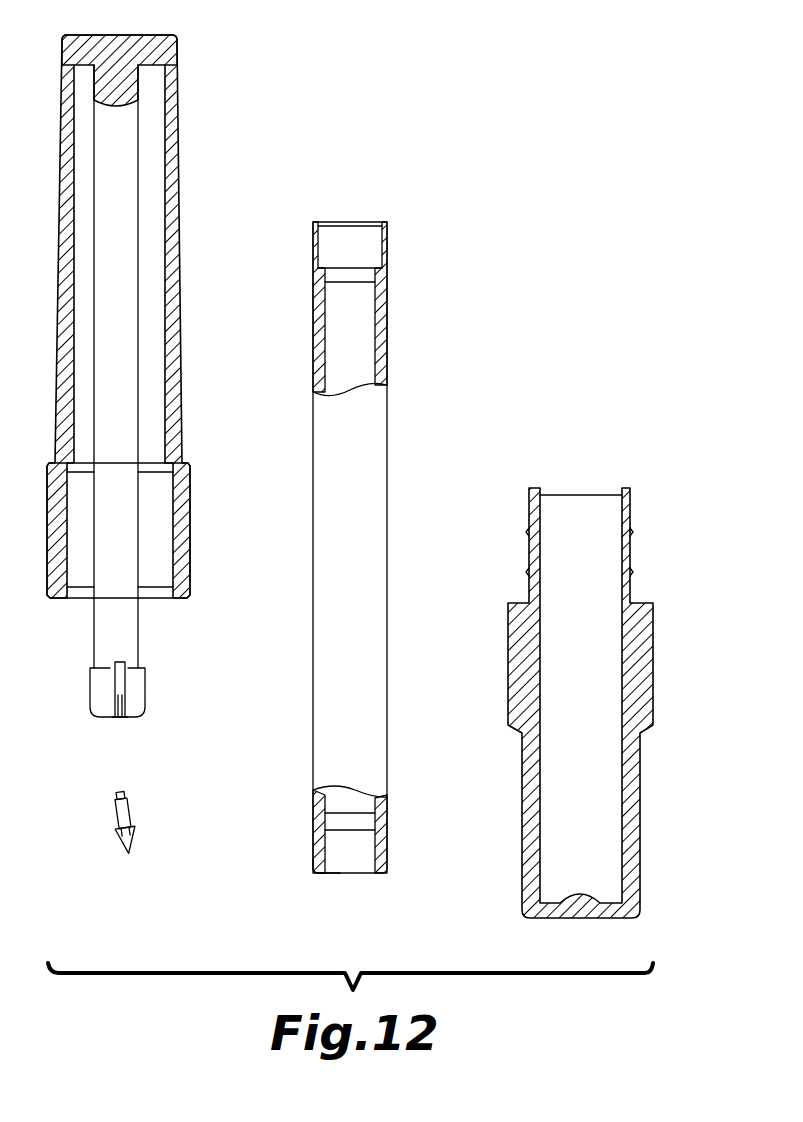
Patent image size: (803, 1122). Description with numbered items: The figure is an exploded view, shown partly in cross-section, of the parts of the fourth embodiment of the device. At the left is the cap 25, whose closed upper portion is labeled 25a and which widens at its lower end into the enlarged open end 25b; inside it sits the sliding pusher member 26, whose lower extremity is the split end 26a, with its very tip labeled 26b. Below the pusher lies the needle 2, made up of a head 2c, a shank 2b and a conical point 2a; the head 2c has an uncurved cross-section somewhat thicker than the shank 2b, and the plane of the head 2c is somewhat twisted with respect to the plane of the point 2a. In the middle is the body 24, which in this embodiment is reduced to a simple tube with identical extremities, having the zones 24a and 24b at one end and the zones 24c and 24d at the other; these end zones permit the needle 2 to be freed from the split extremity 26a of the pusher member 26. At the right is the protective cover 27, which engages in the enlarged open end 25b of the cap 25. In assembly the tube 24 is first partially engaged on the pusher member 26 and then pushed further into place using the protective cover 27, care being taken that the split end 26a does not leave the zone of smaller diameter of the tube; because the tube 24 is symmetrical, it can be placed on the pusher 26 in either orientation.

The needle 2 is at (115, 817).
The conical point 2a is at (108, 850).
The shank 2b is at (112, 815).
The head 2c is at (115, 793).
The body 24 is at (371, 538).
The zone 24a is at (372, 240).
The zone 24b is at (372, 270).
The zone 24c is at (372, 822).
The zone 24d is at (318, 868).
The cap 25 is at (167, 175).
The cap top 25a is at (131, 36).
The enlarged open end 25b is at (176, 521).
The sliding pusher member 26 is at (122, 278).
The split end 26a is at (137, 681).
The inner tube tip 26b is at (115, 722).
The protective cover 27 is at (647, 695).